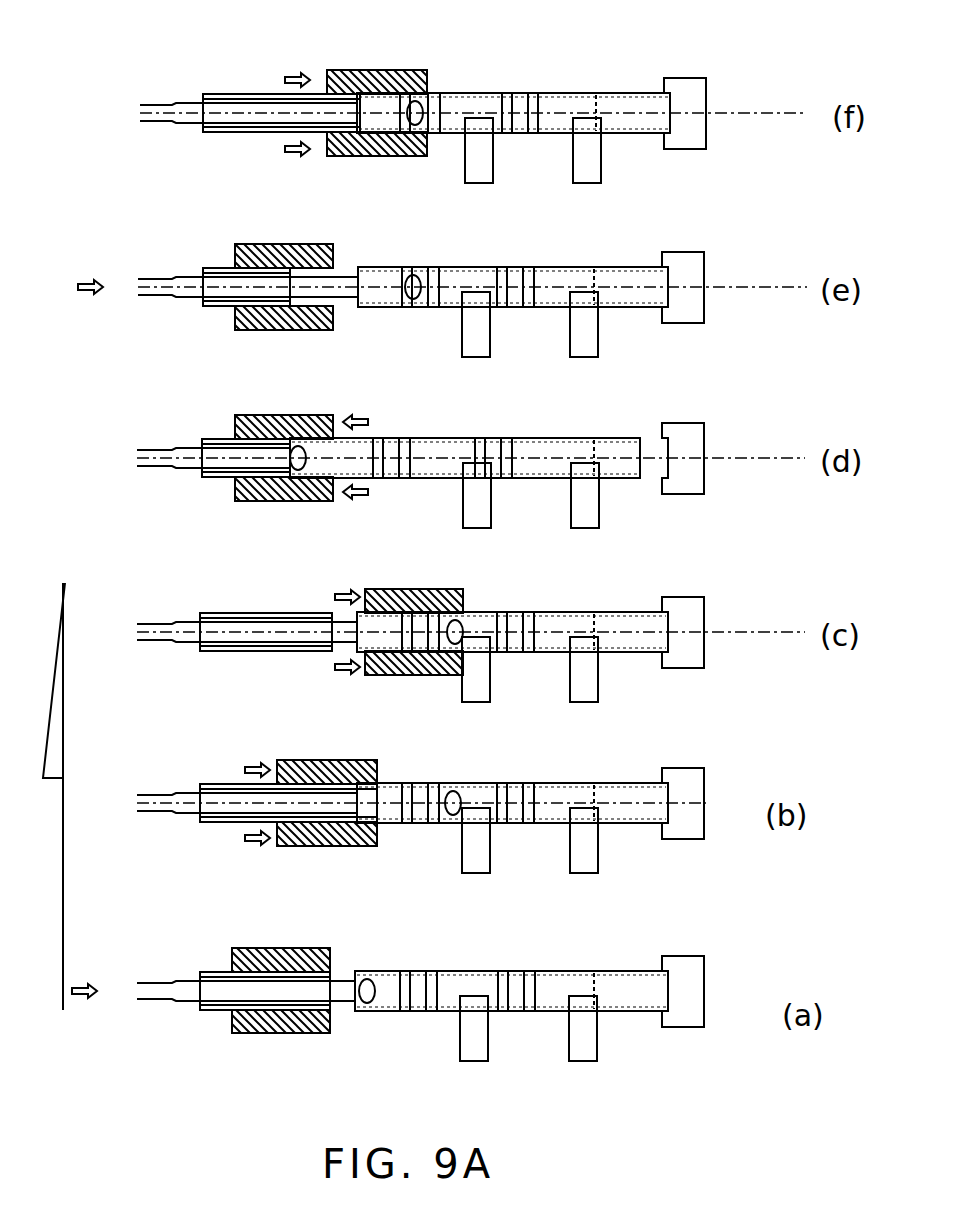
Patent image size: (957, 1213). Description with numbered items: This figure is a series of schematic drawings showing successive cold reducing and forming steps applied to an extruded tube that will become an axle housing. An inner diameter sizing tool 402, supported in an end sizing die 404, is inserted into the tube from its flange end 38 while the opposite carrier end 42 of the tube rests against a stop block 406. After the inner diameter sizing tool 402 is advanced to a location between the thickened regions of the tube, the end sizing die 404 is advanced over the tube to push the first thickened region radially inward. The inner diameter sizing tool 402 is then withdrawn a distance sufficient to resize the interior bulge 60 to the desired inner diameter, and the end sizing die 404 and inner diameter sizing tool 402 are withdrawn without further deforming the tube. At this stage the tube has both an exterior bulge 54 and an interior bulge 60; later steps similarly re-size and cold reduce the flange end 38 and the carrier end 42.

The flange end 38 is at (355, 1012).
The carrier end 42 is at (663, 1029).
The exterior bulge 54 is at (490, 440).
The interior bulge 60 is at (396, 480).
The inner diameter sizing tool 402 is at (160, 991).
The end sizing die 404 is at (258, 1034).
The stop block 406 is at (372, 978).